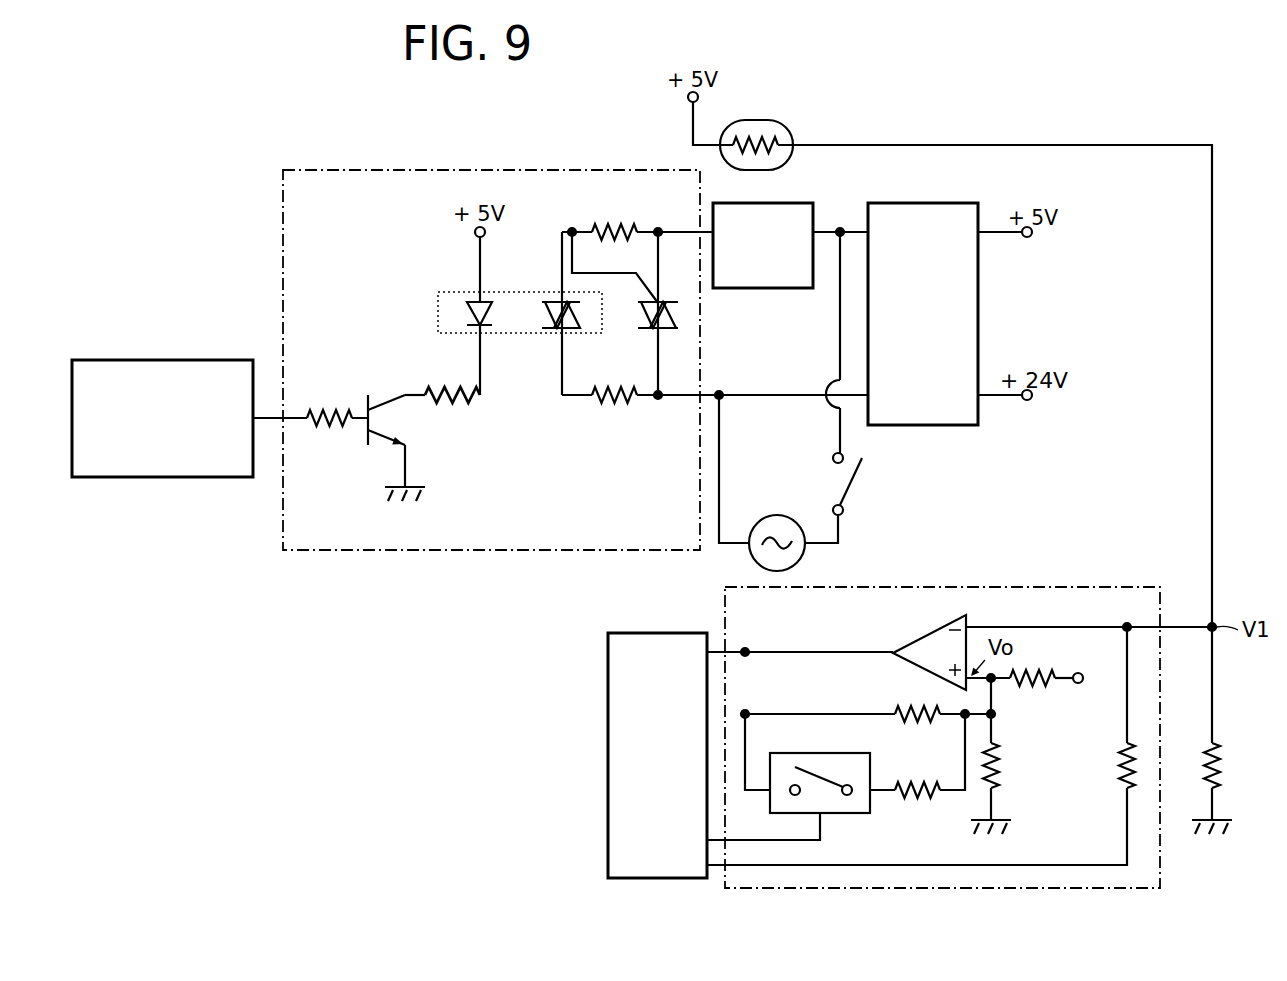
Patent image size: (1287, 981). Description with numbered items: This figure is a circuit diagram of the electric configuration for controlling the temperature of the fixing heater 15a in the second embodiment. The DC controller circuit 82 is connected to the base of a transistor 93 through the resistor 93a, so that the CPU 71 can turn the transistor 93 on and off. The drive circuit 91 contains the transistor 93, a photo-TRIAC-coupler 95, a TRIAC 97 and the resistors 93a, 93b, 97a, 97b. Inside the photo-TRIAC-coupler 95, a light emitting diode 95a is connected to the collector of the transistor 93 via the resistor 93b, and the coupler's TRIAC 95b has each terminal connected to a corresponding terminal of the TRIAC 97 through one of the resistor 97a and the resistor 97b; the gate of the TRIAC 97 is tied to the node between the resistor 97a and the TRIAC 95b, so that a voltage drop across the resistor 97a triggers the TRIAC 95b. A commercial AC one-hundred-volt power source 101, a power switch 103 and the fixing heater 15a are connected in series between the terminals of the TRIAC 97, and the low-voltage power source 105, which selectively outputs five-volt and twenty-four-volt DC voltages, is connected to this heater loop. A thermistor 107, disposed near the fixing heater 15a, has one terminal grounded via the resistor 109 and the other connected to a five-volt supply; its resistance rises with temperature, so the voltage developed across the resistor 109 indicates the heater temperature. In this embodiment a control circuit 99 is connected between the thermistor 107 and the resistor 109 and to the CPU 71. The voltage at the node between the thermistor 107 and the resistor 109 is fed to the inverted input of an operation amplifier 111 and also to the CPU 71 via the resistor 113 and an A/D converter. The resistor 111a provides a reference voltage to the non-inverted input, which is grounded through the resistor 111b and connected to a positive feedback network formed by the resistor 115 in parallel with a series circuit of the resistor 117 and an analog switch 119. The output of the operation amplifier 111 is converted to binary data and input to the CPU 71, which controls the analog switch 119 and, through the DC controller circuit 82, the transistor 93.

The DC controller circuit 82 is at (205, 360).
The drive circuit 91 is at (412, 550).
The transistor 93 is at (360, 460).
The resistor 93a is at (326, 406).
The resistor 93b is at (462, 406).
The photo-TRIAC-coupler 95 is at (452, 293).
The light emitting diode 95a is at (488, 316).
The TRIAC 95b is at (575, 332).
The TRIAC 97 is at (666, 330).
The resistor 97a is at (608, 223).
The resistor 97b is at (628, 407).
The thermistor 107 is at (768, 120).
The fixing heater 15a is at (786, 297).
The low-voltage power source 105 is at (950, 203).
The AC power source 101 is at (778, 515).
The power switch 103 is at (858, 474).
The CPU 71 is at (608, 674).
The control circuit 99 is at (1165, 852).
The operation amplifier 111 is at (920, 632).
The resistor 111a is at (1041, 689).
The resistor 111b is at (1001, 768).
The resistor 115 is at (935, 725).
The resistor 117 is at (935, 800).
The analog switch 119 is at (845, 814).
The resistor 113 is at (1120, 779).
The resistor 109 is at (1222, 765).